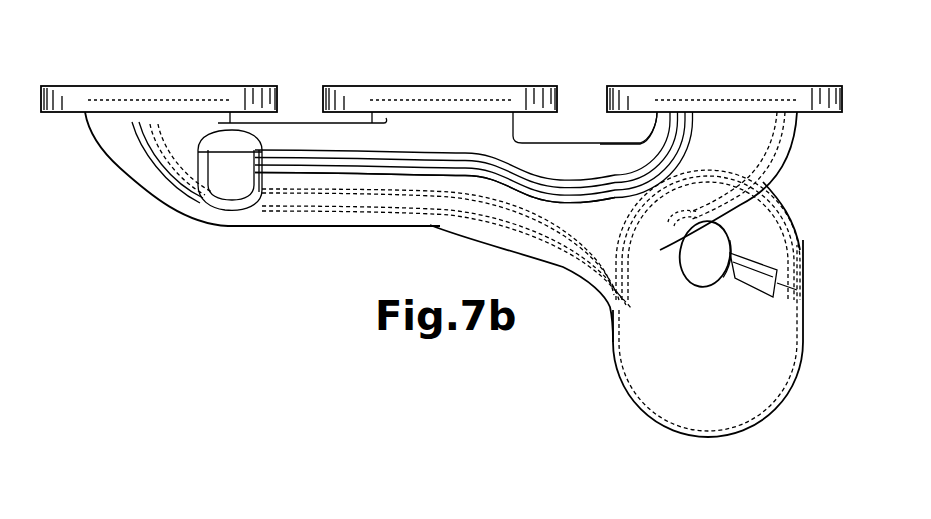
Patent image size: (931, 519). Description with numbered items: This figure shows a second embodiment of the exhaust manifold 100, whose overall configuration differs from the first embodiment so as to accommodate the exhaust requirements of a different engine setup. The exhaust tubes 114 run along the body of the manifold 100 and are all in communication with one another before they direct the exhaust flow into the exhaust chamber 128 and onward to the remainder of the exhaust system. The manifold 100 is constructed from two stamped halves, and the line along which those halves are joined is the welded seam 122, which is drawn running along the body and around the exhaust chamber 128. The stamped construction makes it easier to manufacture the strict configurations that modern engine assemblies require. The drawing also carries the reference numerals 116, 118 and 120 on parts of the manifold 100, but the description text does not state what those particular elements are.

The manifold 100 is at (255, 253).
The exhaust tubes 114 is at (112, 135).
The mounting bars 116 is at (65, 102).
The band portion 118 is at (565, 214).
The outer edge 120 is at (565, 265).
The welded seam 122 is at (368, 200).
The exhaust chamber 128 is at (738, 364).